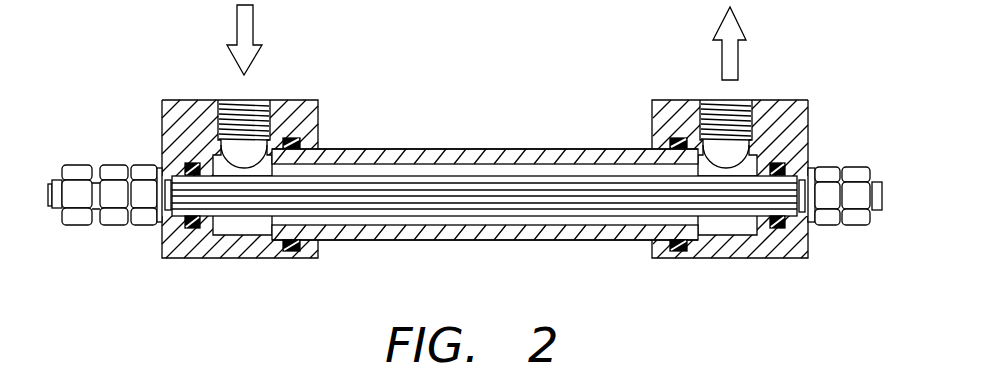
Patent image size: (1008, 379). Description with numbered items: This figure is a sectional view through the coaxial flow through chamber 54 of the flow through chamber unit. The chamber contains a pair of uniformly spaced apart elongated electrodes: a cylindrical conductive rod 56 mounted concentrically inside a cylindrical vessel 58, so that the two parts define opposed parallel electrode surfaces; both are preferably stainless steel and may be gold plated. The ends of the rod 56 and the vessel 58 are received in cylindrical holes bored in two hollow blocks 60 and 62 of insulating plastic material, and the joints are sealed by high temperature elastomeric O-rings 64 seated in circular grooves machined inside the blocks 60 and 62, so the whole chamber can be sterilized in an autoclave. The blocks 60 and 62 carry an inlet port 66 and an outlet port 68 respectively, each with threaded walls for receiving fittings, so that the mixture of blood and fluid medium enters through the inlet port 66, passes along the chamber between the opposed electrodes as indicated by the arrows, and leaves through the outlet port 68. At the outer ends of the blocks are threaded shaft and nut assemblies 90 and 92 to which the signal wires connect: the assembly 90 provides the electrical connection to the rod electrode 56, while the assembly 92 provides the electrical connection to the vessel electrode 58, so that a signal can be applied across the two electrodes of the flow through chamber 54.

The flow through chamber 54 is at (399, 145).
The cylindrical conductive rod 56 is at (472, 195).
The cylindrical vessel 58 is at (560, 158).
The hollow block 60 is at (177, 100).
The hollow block 62 is at (788, 100).
The O-rings 64 is at (195, 223).
The inlet port 66 is at (260, 110).
The outlet port 68 is at (715, 108).
The threaded shaft and nut assembly 90 is at (112, 225).
The threaded shaft and nut assembly 92 is at (852, 227).